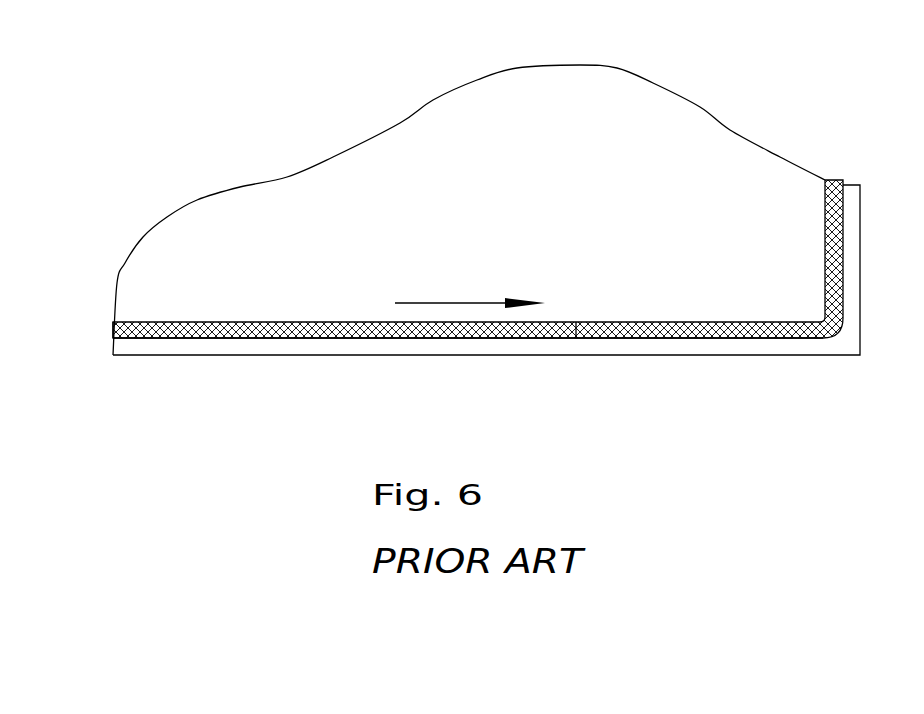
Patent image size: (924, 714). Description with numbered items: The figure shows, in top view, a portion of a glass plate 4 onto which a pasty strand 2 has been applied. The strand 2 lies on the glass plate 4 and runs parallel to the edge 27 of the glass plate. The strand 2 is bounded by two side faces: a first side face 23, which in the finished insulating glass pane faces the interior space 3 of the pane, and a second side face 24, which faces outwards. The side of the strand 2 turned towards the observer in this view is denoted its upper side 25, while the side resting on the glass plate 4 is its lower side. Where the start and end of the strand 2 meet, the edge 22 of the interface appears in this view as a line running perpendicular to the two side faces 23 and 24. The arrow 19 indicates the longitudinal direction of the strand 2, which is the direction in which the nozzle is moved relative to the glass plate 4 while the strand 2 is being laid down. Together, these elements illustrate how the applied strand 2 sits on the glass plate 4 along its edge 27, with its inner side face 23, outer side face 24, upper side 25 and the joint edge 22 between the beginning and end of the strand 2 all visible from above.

The strand 2 is at (263, 330).
The interior space 3 is at (613, 243).
The glass plate 4 is at (732, 129).
The arrow 19 is at (452, 302).
The edge of the interface 22 is at (584, 317).
The first side face 23 is at (150, 319).
The second side face 24 is at (206, 342).
The upper side 25 is at (412, 332).
The edge 27 is at (766, 359).